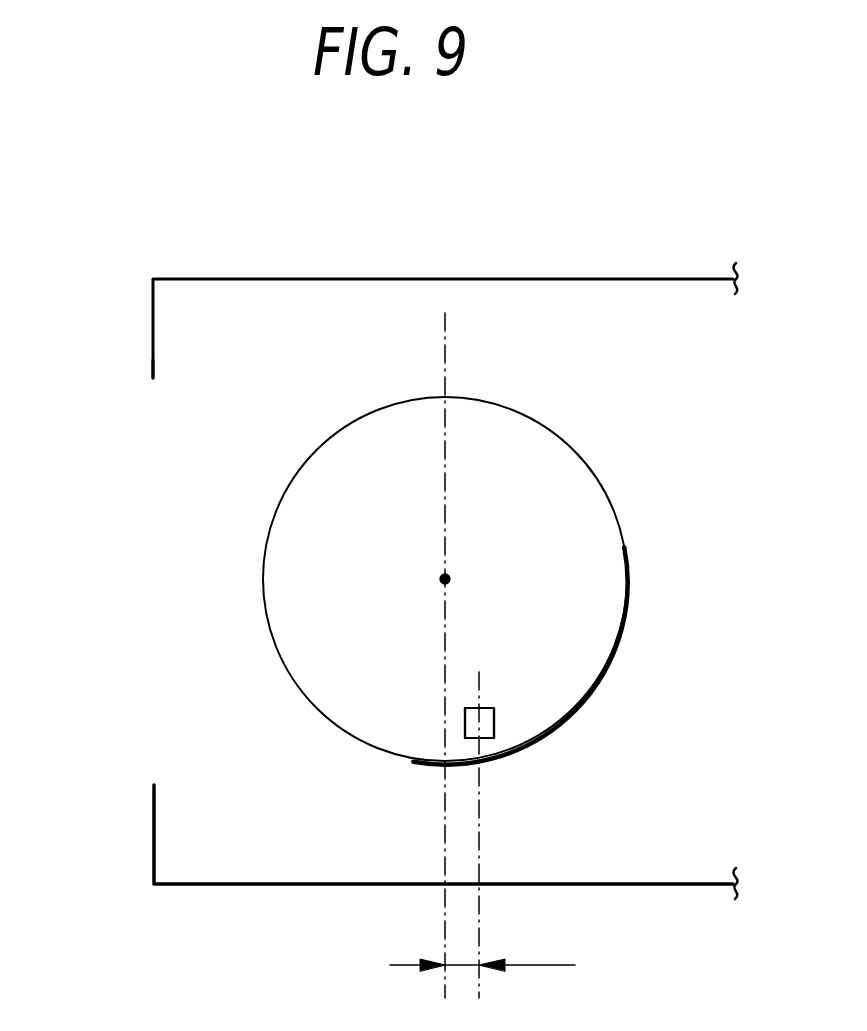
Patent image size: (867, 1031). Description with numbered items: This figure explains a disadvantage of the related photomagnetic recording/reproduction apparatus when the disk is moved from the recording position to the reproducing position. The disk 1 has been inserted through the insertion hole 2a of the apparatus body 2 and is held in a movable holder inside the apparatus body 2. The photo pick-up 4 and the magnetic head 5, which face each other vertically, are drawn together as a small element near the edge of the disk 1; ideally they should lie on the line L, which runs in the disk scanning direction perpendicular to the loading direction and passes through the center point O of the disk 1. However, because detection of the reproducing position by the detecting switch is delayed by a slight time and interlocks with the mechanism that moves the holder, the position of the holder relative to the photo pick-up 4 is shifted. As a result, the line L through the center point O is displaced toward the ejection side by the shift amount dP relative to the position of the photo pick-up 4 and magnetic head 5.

The disk 1 is at (630, 578).
The apparatus body 2 is at (298, 279).
The insertion hole 2a is at (152, 378).
The photo pick-up 4 is at (494, 722).
The magnetic head 5 is at (479, 723).
The line L is at (446, 348).
The center point O is at (463, 581).
The shift amount ΔP dP is at (482, 947).